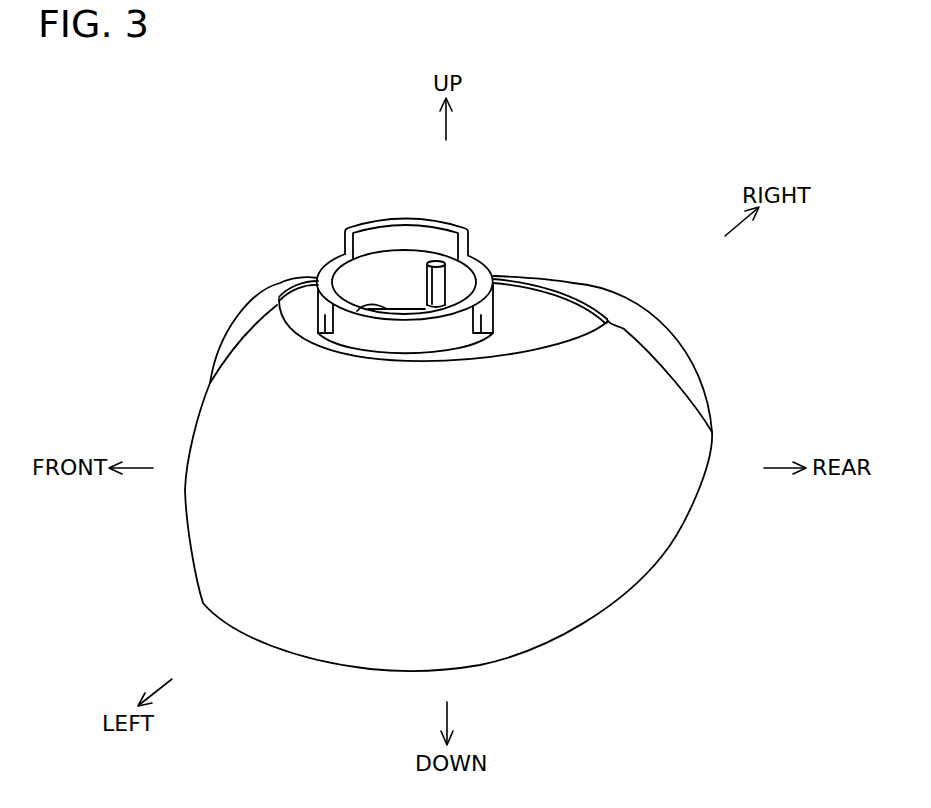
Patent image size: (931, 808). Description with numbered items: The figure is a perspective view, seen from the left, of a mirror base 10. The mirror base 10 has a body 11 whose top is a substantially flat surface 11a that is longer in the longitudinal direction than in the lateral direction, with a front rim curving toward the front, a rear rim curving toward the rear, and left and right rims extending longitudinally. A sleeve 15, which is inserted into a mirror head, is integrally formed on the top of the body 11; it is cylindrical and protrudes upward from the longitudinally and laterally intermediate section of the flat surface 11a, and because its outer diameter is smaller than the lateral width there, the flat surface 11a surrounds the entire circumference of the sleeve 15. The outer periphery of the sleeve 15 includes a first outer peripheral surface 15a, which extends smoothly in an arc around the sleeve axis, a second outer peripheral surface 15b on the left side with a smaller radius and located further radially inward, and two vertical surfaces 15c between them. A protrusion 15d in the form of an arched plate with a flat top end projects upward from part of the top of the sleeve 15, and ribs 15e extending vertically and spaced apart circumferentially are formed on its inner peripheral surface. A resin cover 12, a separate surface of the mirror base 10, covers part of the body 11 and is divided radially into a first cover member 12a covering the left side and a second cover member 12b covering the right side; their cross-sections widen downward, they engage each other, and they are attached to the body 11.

The mirror base 10 is at (558, 258).
The body 11 is at (580, 318).
The flat surface 11a is at (550, 310).
The cover 12 is at (797, 318).
The first cover member 12a is at (650, 404).
The second cover member 12b is at (673, 350).
The sleeve 15 is at (325, 265).
The first outer peripheral surface 15a is at (490, 310).
The second outer peripheral surface 15b is at (400, 337).
The vertical surfaces 15c is at (325, 335).
The protrusion 15d is at (370, 222).
The ribs 15e is at (436, 262).